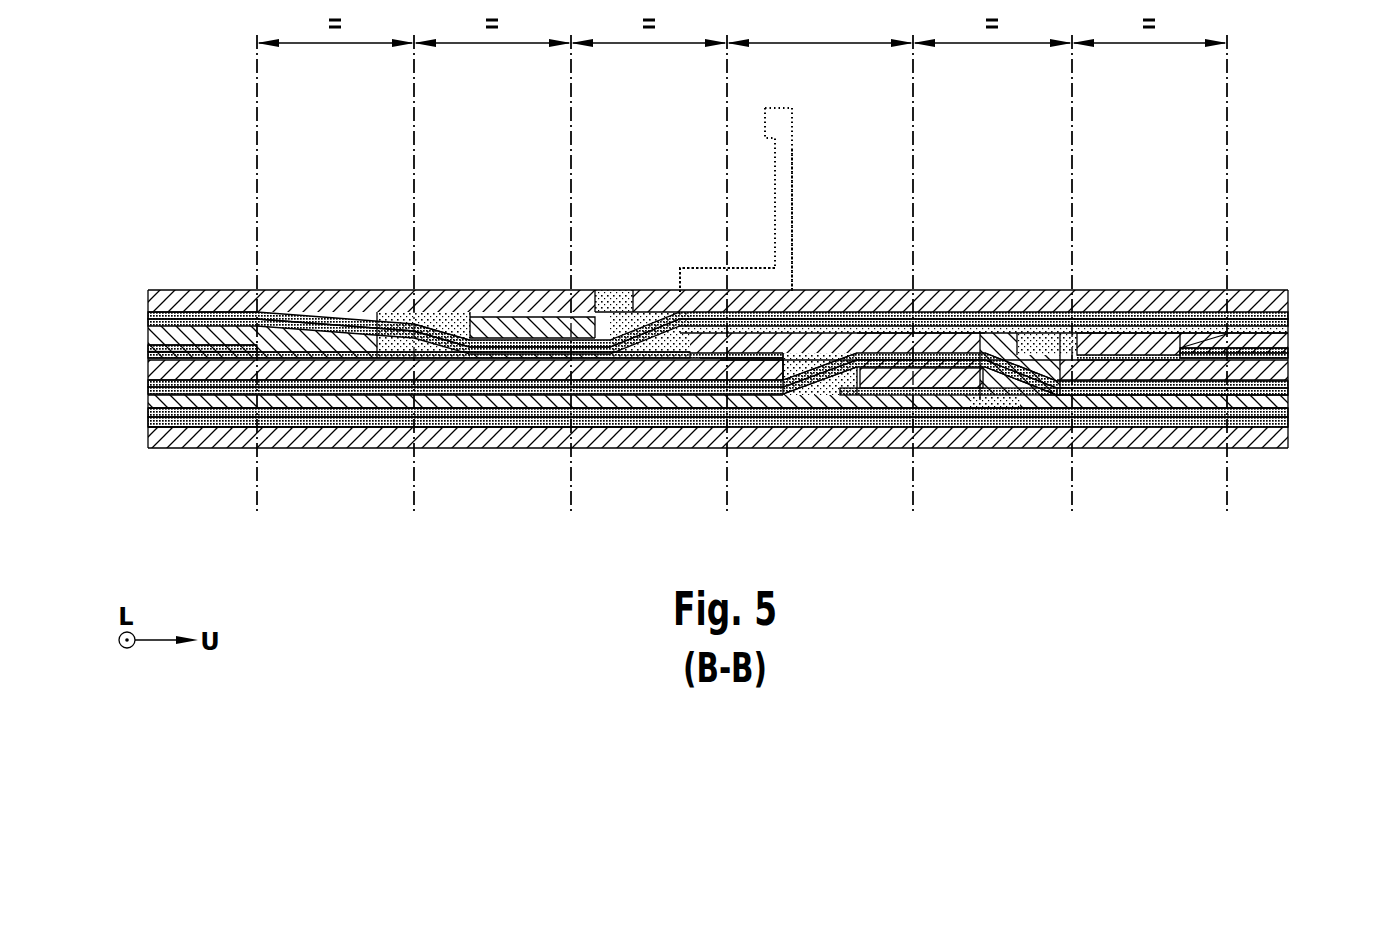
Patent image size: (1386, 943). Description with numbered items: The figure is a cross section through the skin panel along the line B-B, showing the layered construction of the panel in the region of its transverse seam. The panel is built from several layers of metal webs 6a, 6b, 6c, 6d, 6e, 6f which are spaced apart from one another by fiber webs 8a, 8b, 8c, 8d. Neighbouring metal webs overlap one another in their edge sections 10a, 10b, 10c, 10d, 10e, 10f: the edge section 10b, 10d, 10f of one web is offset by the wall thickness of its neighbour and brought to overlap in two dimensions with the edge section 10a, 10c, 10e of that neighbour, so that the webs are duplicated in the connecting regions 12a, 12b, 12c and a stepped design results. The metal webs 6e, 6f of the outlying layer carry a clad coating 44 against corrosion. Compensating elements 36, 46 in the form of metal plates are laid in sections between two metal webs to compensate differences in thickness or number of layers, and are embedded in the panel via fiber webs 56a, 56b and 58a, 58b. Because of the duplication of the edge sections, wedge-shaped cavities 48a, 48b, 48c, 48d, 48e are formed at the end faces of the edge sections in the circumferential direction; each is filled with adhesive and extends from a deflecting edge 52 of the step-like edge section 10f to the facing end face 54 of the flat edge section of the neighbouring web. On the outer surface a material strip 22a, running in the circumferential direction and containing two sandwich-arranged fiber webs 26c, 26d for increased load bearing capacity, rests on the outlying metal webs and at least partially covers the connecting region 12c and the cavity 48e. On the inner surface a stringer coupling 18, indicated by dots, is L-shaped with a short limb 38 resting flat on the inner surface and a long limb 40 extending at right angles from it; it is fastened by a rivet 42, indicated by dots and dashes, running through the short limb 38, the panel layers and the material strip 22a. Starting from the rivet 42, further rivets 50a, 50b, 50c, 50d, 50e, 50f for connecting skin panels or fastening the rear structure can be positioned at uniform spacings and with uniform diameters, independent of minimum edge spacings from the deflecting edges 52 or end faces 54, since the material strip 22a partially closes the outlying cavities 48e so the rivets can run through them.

The metal web 6a is at (162, 300).
The metal web 6b is at (1160, 292).
The metal web 6c is at (152, 436).
The metal web 6d is at (1272, 401).
The metal web 6e is at (195, 440).
The metal web 6f is at (1272, 433).
The fiber web 8a is at (150, 315).
The fiber web 8b is at (150, 322).
The fiber web 8c is at (150, 384).
The fiber web 8d is at (150, 391).
The edge section 10a is at (510, 300).
The edge section 10b is at (603, 300).
The edge section 10c is at (750, 378).
The edge section 10d is at (783, 362).
The edge section 10e is at (925, 390).
The edge section 10f is at (873, 350).
The connecting region 12a is at (542, 285).
The connecting region 12b is at (792, 322).
The connecting region 12c is at (980, 348).
The stringer coupling 18 is at (803, 147).
The material strip 22a is at (245, 440).
The fiber web 26c is at (347, 438).
The fiber web 26d is at (445, 440).
The compensating element 36 is at (195, 335).
The short limb 38 is at (713, 265).
The long limb 40 is at (795, 192).
The rivet 42 is at (722, 470).
The clad coating 44 is at (1170, 440).
The compensating element 46 is at (1280, 338).
The wedge-shaped cavity 48a is at (633, 293).
The wedge-shaped cavity 48b is at (452, 312).
The wedge-shaped cavity 48c is at (640, 415).
The wedge-shaped cavity 48d is at (868, 425).
The wedge-shaped cavity 48e is at (1042, 440).
The rivet 50a is at (257, 244).
The rivet 50b is at (413, 242).
The rivet 50c is at (571, 470).
The rivet 50d is at (913, 244).
The rivet 50e is at (1072, 244).
The rivet 50f is at (1227, 244).
The deflecting edge 52 is at (1030, 440).
The end face 54 is at (985, 440).
The fiber web 56a is at (150, 348).
The fiber web 56b is at (150, 355).
The fiber web 58a is at (1290, 351).
The fiber web 58b is at (1272, 368).